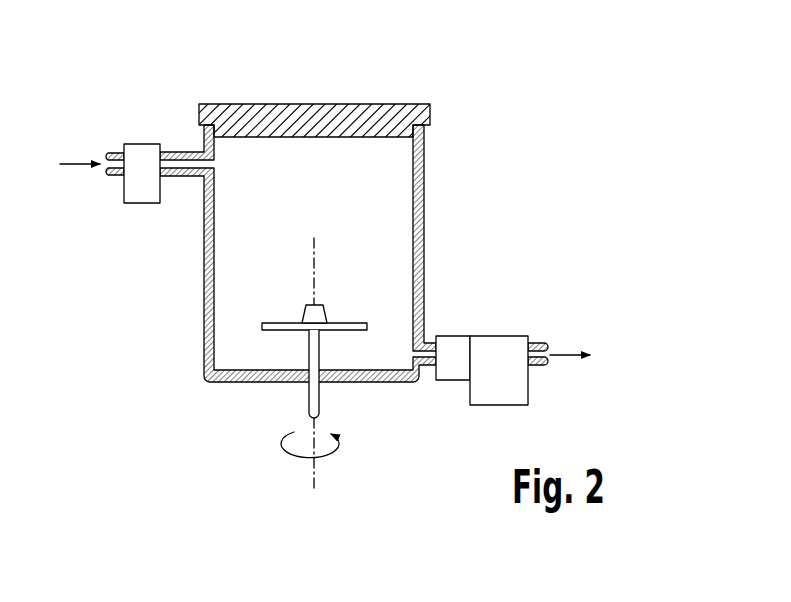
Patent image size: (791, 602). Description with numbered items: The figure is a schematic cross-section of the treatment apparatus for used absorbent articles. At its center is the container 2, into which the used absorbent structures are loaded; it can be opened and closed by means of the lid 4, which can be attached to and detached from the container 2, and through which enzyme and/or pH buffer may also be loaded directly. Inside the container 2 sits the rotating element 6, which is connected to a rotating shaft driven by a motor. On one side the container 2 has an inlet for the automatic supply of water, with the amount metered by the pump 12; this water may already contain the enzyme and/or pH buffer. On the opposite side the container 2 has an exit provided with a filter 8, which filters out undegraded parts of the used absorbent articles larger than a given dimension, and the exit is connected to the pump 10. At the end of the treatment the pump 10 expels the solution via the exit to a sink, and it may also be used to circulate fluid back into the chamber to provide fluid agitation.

The container 2 is at (424, 185).
The lid 4 is at (390, 104).
The rotating element 6 is at (285, 333).
The filter 8 is at (455, 336).
The pump 10 is at (502, 336).
The pump 12 is at (140, 144).